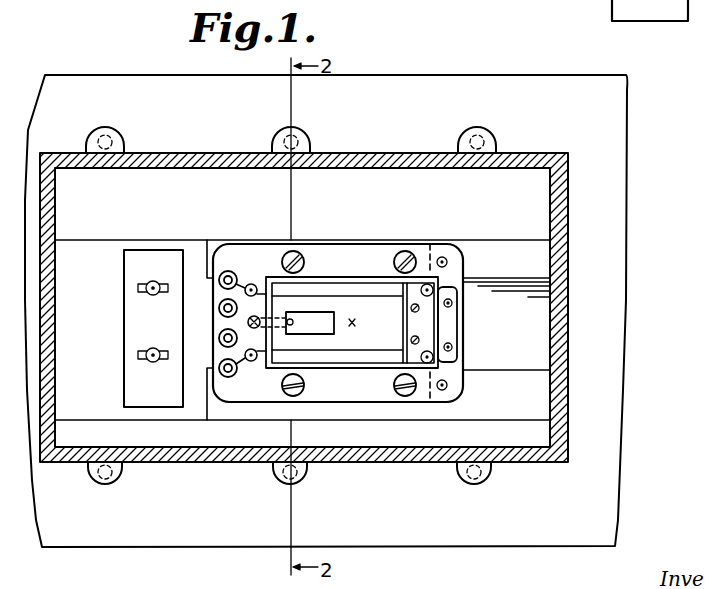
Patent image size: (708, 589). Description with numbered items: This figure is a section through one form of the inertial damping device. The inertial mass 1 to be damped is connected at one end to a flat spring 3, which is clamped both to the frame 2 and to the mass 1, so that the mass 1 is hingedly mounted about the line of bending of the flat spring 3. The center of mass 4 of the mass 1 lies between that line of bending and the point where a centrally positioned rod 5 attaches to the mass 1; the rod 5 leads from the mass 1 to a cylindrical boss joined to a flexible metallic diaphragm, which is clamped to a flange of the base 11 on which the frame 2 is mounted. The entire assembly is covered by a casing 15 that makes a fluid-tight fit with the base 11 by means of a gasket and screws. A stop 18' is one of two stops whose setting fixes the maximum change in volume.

The base 11 is at (438, 74).
The casing 15 is at (389, 153).
The frame 2 is at (233, 246).
The mass 1 is at (386, 323).
The flat spring 3 is at (463, 322).
The center of mass 4 is at (352, 327).
The rod 5 is at (293, 323).
The stop 18' is at (215, 325).